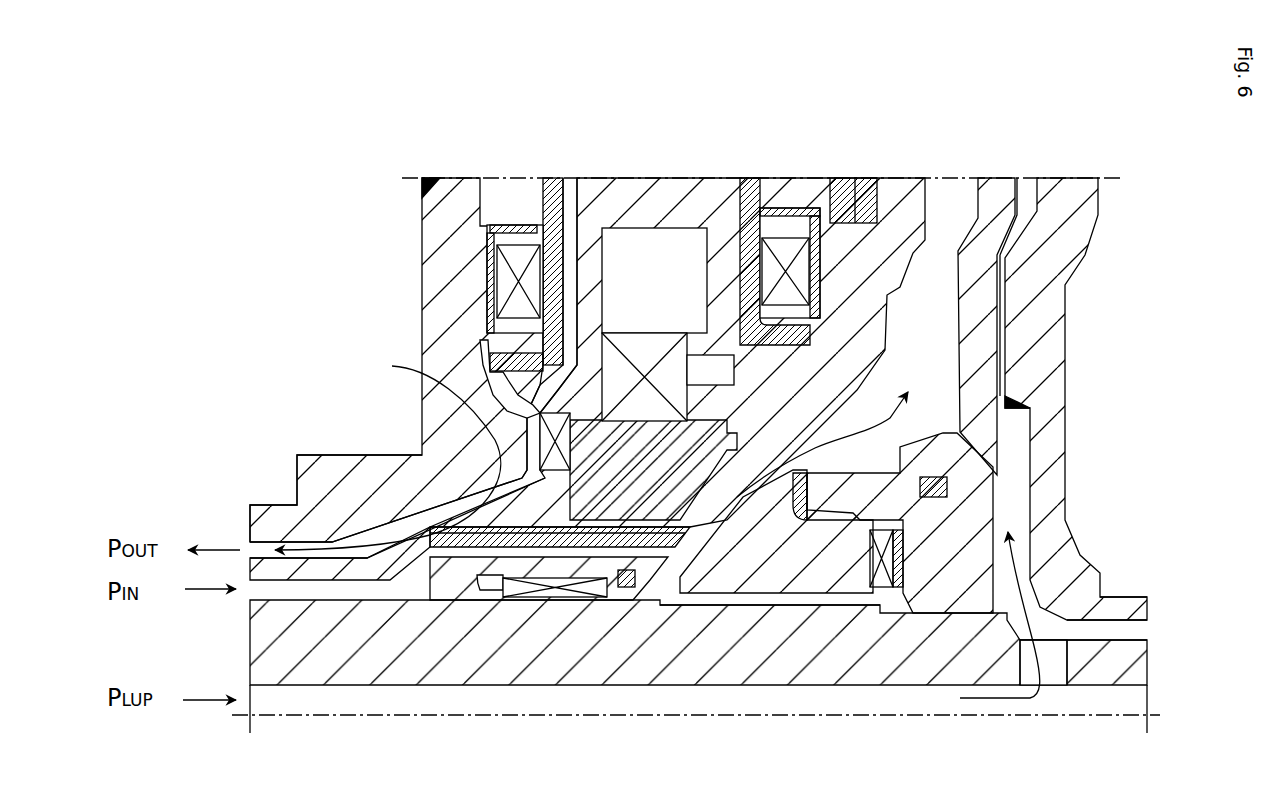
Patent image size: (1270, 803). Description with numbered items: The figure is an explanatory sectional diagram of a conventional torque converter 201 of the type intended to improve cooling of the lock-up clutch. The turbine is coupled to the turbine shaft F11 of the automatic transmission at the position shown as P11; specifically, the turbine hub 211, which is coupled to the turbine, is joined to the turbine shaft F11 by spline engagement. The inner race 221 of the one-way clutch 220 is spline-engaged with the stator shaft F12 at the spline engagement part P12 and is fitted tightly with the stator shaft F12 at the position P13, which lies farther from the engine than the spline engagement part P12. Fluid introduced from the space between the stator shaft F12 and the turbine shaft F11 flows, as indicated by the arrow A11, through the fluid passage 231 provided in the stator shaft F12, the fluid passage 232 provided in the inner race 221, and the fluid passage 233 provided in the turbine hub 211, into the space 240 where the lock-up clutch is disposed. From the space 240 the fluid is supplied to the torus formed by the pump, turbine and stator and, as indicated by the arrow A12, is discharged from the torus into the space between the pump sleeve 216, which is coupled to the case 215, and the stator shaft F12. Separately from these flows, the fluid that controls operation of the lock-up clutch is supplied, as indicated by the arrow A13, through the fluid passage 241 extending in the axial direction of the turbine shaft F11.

The torque converter 201 is at (1072, 128).
The case 215 is at (432, 170).
The pump sleeve 216 is at (337, 472).
The one-way clutch 220 is at (641, 172).
The turbine hub 211 is at (903, 178).
The inner race 221 is at (648, 437).
The space 240 is at (982, 141).
The fluid passage 233 is at (780, 487).
The fluid passage 231 is at (477, 578).
The fluid passage 232 is at (660, 520).
The fluid passage 241 is at (292, 700).
The turbine shaft F11 is at (285, 653).
The stator shaft F12 is at (267, 570).
The arrow A11 is at (839, 422).
The arrow A12 is at (388, 449).
The arrow A13 is at (1010, 698).
The position P11 is at (787, 616).
The spline engagement part P12 is at (560, 566).
The position P13 is at (403, 554).